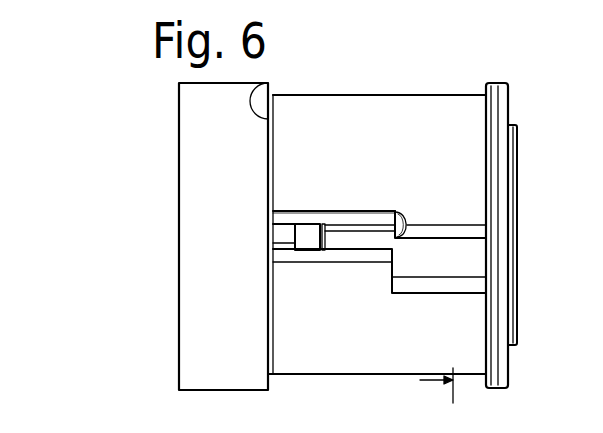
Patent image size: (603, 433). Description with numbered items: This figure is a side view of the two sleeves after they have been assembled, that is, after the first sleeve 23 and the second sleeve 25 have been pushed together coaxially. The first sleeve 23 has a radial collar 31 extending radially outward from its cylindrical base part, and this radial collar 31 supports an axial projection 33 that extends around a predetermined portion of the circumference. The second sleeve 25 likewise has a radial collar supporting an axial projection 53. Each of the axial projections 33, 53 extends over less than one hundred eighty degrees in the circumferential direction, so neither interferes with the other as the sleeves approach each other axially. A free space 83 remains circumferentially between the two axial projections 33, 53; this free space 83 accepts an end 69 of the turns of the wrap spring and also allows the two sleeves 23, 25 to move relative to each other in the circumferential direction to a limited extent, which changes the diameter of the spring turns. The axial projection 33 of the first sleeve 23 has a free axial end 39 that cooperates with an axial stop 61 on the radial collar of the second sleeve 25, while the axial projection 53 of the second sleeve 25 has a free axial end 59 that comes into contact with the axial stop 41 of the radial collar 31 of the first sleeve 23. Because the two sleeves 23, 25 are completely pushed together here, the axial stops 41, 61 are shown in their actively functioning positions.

The radial collar 31 is at (195, 121).
The free axial end 59 is at (256, 86).
The axial stop 41 is at (268, 197).
The axial projection 53 is at (403, 175).
The end of the turns of the wrap spring 69 is at (306, 236).
The free space 83 is at (428, 262).
The axial projection 33 is at (365, 295).
The axial stop 61 is at (488, 307).
The second sleeve 25 is at (463, 120).
The free axial end 39 is at (486, 332).
The first sleeve 23 is at (462, 352).